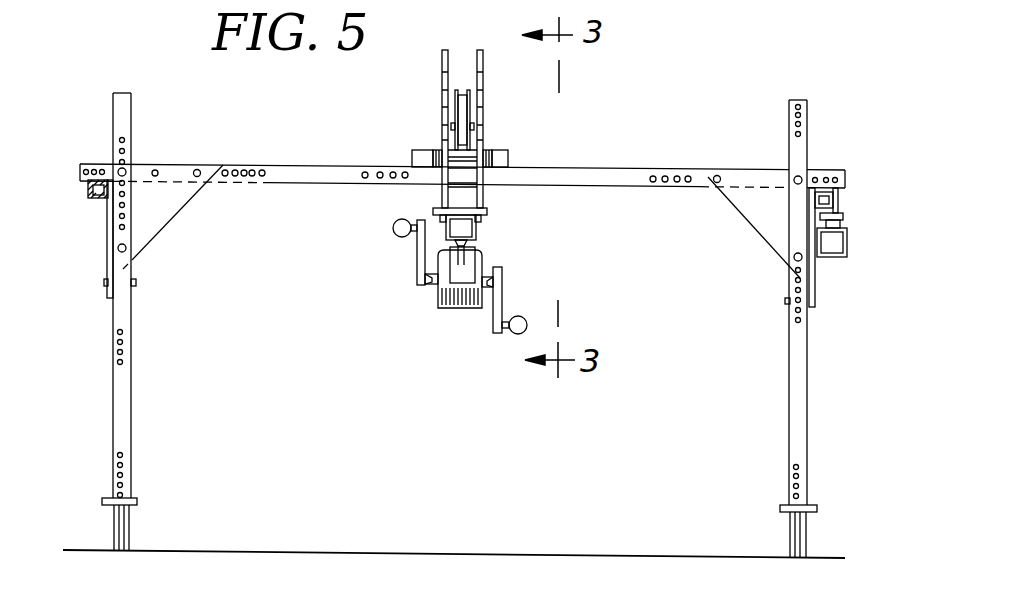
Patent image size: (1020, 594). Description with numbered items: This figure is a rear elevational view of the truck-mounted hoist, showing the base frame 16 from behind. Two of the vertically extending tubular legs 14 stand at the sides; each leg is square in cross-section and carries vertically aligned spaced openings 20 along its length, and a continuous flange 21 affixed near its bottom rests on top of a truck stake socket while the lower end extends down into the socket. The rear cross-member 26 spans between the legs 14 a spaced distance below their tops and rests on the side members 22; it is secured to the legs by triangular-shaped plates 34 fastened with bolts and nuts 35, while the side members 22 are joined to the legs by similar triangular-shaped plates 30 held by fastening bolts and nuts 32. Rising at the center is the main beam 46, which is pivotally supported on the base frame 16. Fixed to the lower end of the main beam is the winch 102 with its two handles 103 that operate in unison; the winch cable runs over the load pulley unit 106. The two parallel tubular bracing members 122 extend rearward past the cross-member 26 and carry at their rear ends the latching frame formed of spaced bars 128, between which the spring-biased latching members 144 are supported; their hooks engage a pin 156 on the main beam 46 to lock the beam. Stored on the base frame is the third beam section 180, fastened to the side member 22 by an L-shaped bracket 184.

The tubular legs 14 is at (112, 405).
The base frame 16 is at (833, 150).
The spaced openings 20 is at (117, 333).
The continuous flange 21 is at (103, 500).
The side members 22 is at (90, 194).
The rear cross-member 26 is at (312, 162).
The triangular-shaped plates 30 is at (107, 240).
The fastening bolts and nuts 32 is at (104, 283).
The triangular-shaped plates 34 is at (172, 202).
The bolts and nuts 35 is at (199, 170).
The main beam 46 is at (480, 238).
The winch 102 is at (455, 308).
The handles 103 is at (393, 228).
The load pulley unit 106 is at (470, 105).
The tubular bracing members 122 is at (418, 150).
The spaced bars 128 is at (490, 150).
The latching members 144 is at (490, 80).
The pin 156 is at (487, 211).
The third section 180 is at (848, 248).
The L-shaped bracket 184 is at (838, 198).